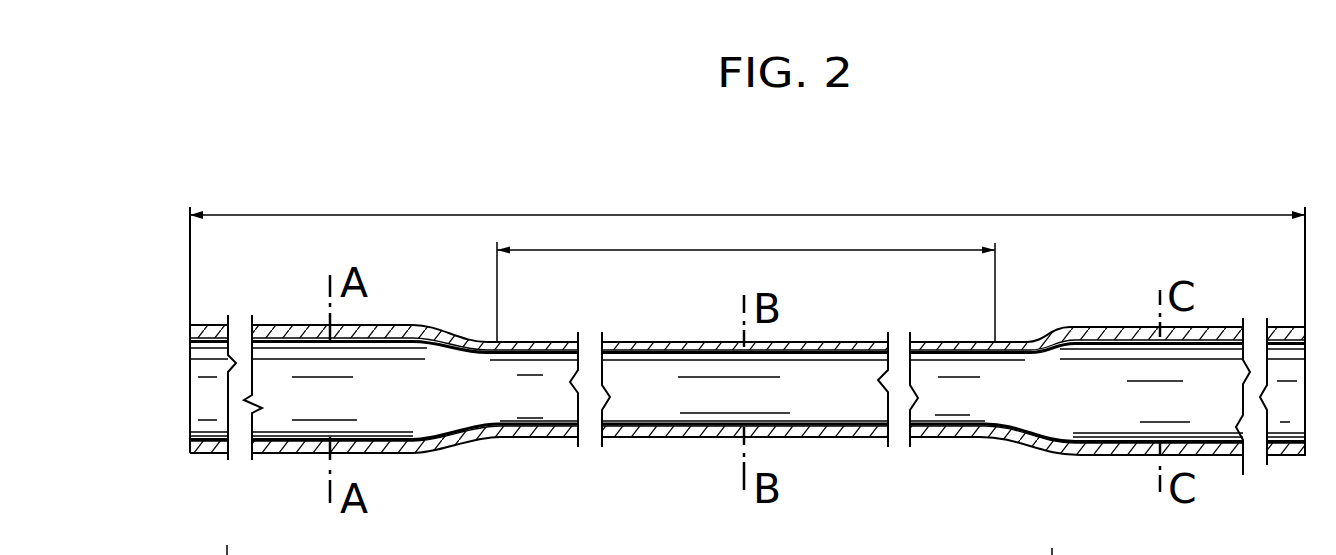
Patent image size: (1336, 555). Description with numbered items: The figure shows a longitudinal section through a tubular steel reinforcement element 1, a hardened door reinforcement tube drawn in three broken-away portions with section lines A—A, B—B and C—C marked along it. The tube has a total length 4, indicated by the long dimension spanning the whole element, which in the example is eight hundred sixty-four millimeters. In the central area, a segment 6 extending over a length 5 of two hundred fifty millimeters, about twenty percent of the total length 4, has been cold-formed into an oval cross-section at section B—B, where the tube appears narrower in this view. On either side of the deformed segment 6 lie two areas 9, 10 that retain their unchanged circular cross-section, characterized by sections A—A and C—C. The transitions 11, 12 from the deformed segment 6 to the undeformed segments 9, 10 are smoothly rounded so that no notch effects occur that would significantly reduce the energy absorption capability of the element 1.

The tubular steel reinforcement element 1 is at (1042, 209).
The total length 4 is at (578, 215).
The length of the deformed segment 5 is at (713, 250).
The deformed segment 6 is at (703, 438).
The undeformed segment 9 is at (287, 323).
The undeformed segment 10 is at (1208, 330).
The transition 11 is at (450, 333).
The transition 12 is at (1028, 337).